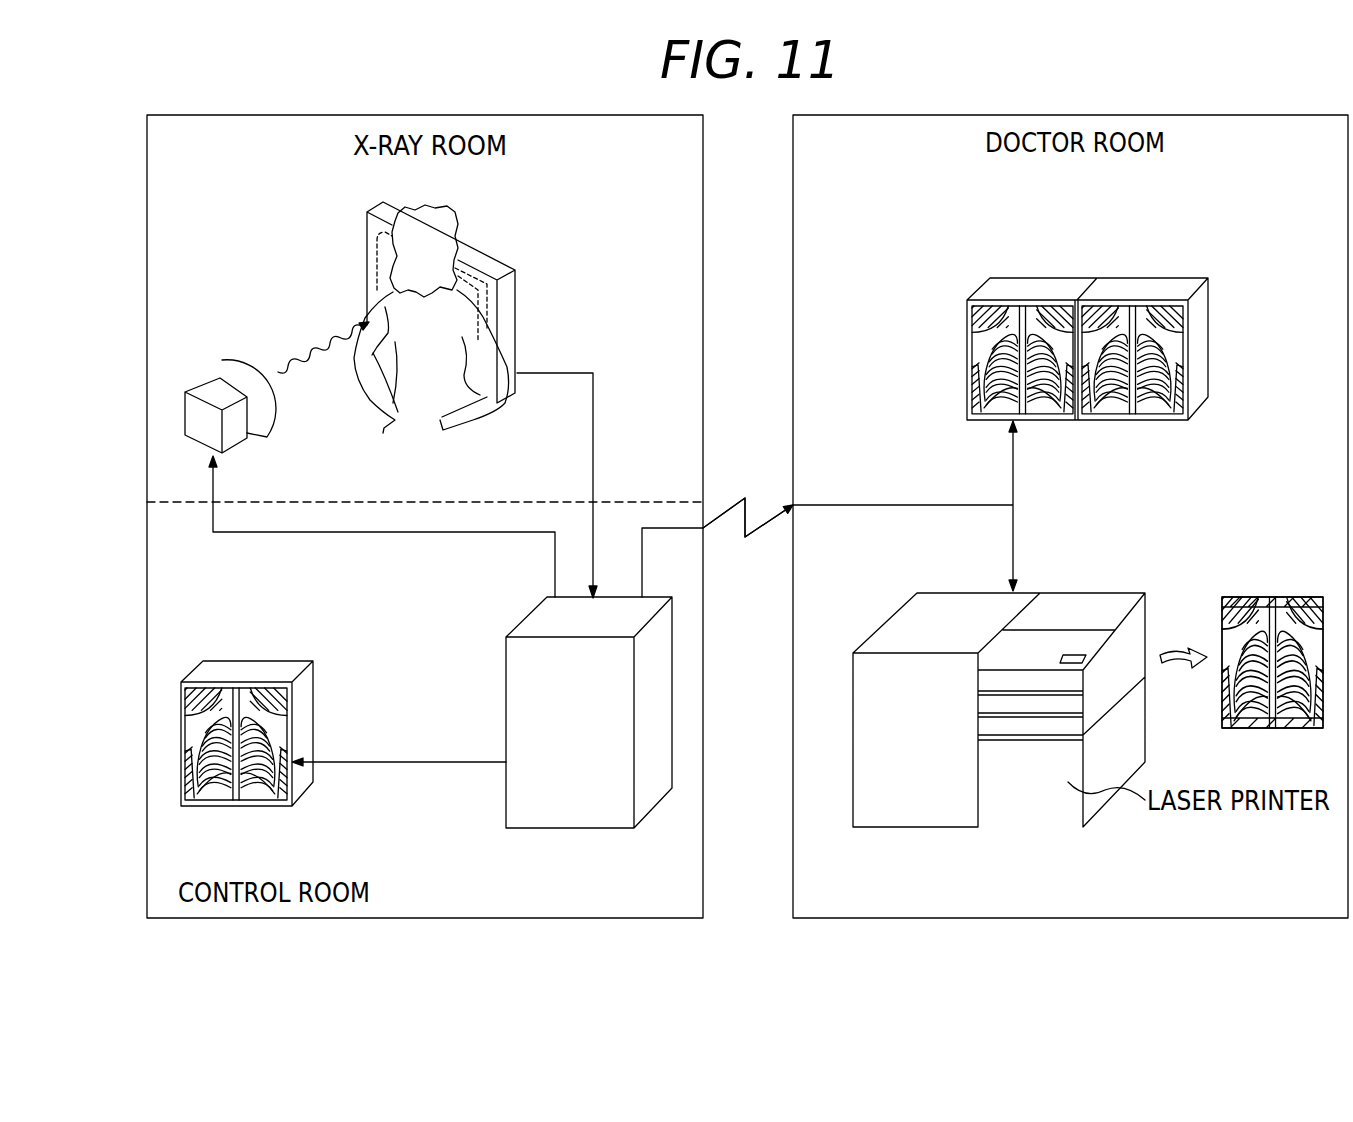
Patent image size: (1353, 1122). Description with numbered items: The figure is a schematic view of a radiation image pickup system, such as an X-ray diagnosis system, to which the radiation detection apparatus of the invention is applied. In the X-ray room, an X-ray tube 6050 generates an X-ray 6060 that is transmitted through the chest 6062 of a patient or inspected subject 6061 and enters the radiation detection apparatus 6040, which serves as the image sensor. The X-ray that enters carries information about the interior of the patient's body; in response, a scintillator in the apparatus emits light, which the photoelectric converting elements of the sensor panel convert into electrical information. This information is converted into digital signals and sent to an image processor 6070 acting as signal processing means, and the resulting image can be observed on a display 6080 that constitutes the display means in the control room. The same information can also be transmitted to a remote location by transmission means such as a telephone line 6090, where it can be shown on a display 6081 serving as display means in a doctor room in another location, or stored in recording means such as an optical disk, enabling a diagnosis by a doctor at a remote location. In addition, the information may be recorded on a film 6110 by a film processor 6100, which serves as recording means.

The radiation detection apparatus 6040 is at (497, 300).
The X-ray tube 6050 is at (208, 387).
The X-ray 6060 is at (317, 345).
The patient 6061 is at (450, 208).
The chest 6062 is at (423, 373).
The image processor 6070 is at (538, 827).
The display 6080 is at (250, 670).
The display 6081 is at (1012, 285).
The telephone line 6090 is at (738, 498).
The film processor 6100 is at (908, 816).
The film 6110 is at (1243, 597).